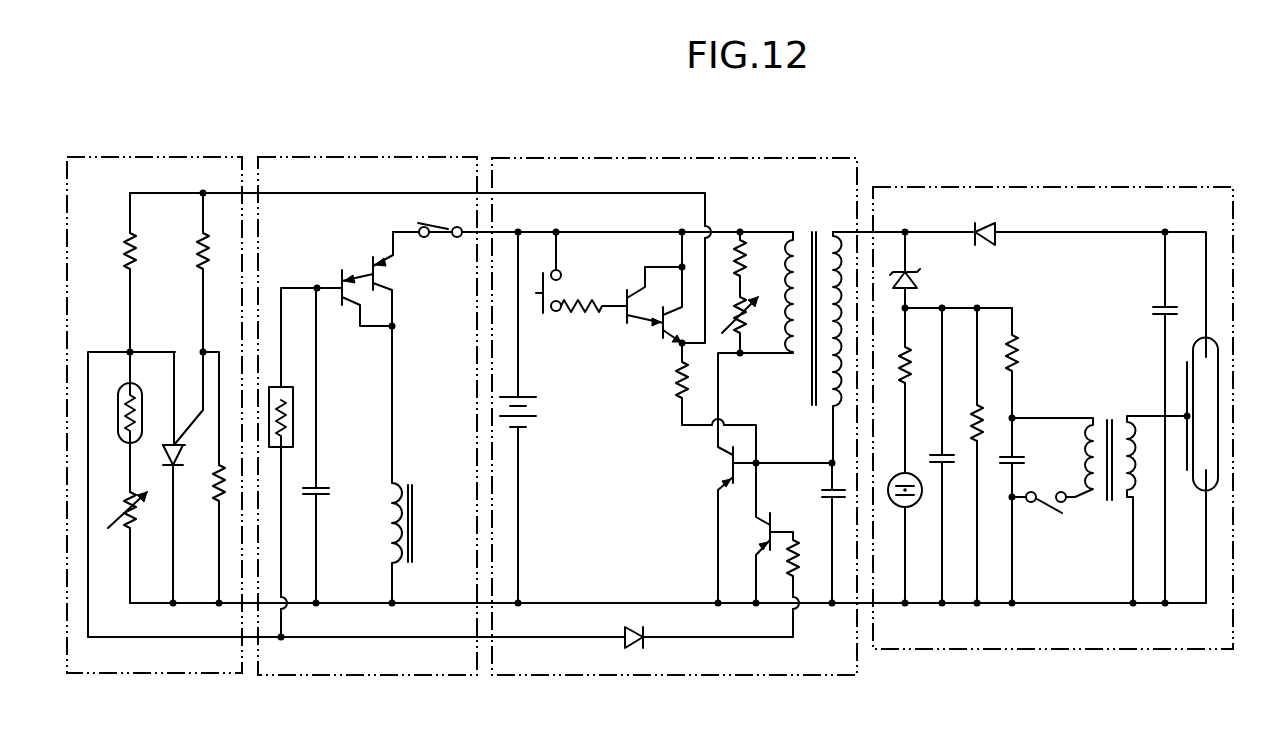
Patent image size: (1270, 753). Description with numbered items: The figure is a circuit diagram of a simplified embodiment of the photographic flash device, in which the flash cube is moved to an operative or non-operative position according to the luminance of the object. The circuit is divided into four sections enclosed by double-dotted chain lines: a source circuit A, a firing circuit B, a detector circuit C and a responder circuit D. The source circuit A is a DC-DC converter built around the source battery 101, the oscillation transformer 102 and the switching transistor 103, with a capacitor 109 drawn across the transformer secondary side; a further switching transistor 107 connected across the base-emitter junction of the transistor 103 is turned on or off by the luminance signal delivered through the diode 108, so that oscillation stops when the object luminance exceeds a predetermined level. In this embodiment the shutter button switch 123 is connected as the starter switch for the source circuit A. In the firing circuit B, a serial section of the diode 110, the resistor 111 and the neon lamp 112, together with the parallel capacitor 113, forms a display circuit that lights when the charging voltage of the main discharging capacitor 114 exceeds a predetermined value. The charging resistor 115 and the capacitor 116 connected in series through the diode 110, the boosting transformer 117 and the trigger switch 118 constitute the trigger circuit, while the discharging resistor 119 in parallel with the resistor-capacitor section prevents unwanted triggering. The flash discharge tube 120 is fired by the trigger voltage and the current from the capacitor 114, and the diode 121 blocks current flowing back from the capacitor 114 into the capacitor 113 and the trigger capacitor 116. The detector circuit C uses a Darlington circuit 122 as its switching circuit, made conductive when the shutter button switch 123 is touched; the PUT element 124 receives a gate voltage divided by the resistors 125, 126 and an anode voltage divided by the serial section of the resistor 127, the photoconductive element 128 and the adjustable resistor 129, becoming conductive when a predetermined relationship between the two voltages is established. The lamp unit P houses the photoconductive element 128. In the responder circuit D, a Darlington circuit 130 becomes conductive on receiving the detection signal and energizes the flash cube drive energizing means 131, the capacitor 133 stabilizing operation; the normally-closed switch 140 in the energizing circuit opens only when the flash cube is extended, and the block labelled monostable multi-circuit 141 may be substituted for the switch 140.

The source battery 101 is at (533, 413).
The oscillation transformer 102 is at (812, 235).
The switching transistor 103 is at (728, 462).
The switching transistor 107 is at (765, 532).
The diode 108 is at (640, 650).
The capacitor 109 is at (822, 492).
The diode 110 is at (912, 280).
The resistor 111 is at (910, 345).
The neon lamp 112 is at (895, 505).
The capacitor 113 is at (952, 462).
The main discharging capacitor 114 is at (1180, 308).
The charging resistor 115 is at (1018, 338).
The capacitor 116 is at (1020, 456).
The boosting transformer 117 is at (1110, 420).
The trigger switch 118 is at (1047, 508).
The discharging resistor 119 is at (985, 428).
The flash discharge tube 120 is at (1193, 482).
The diode 121 is at (985, 226).
The Darlington circuit 122 is at (655, 324).
The shutter button switch 123 is at (545, 312).
The PUT element 124 is at (171, 440).
The resistor 125 is at (198, 250).
The resistor 126 is at (215, 482).
The resistor 127 is at (124, 250).
The photoconductive element 128 is at (120, 413).
The adjustable resistor 129 is at (120, 522).
The Darlington circuit 130 is at (366, 278).
The flash cube drive energizing means 131 is at (385, 522).
The capacitor 133 is at (328, 492).
The normally-closed switch 140 is at (443, 238).
The monostable multi-circuit 141 is at (278, 387).
The lamp unit P is at (128, 350).
The source circuit A is at (605, 157).
The firing circuit B is at (1042, 187).
The detector circuit C is at (153, 157).
The responder circuit D is at (378, 157).